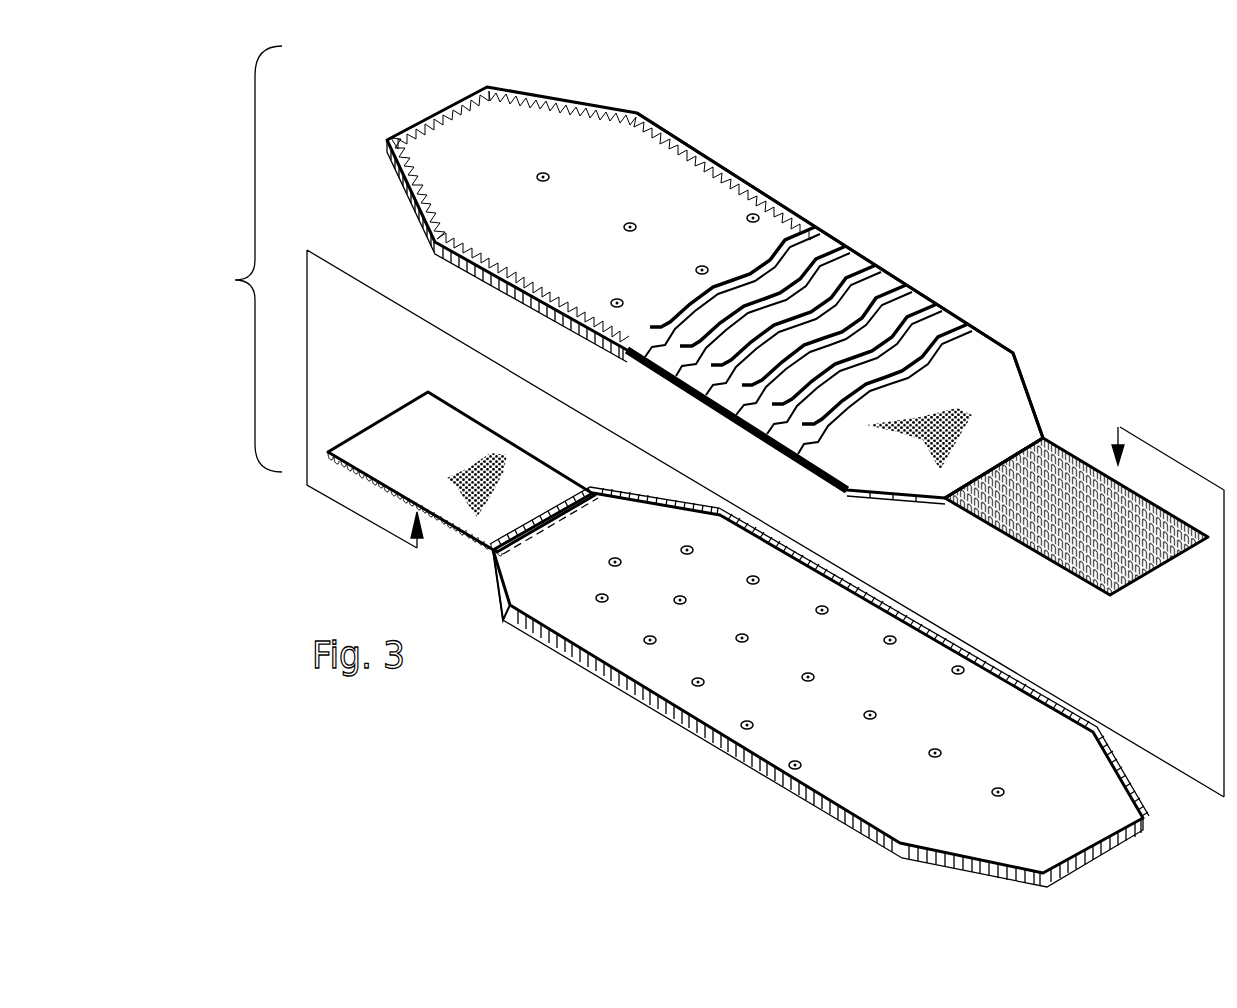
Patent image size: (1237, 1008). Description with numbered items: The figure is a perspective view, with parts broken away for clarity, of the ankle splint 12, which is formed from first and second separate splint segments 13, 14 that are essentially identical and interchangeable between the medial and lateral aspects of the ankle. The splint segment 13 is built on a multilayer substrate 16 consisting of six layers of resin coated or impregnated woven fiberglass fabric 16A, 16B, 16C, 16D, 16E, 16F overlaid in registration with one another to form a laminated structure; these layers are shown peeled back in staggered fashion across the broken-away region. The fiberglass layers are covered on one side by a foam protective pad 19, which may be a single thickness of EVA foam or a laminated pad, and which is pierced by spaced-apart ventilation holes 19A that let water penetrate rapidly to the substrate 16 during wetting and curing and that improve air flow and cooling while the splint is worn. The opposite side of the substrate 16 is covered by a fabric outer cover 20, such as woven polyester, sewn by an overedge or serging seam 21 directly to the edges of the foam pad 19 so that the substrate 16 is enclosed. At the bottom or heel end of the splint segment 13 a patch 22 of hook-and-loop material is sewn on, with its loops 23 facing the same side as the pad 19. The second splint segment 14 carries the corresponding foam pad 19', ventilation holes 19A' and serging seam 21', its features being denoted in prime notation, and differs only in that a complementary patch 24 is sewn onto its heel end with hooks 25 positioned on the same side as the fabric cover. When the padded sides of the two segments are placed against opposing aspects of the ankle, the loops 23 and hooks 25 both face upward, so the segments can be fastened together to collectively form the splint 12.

The ankle splint 12 is at (235, 280).
The splint segment 13 is at (773, 193).
The splint segment 14 is at (838, 830).
The multilayer substrate 16 is at (797, 467).
The woven fiberglass fabric layer 16A is at (983, 346).
The woven fiberglass fabric layer 16B is at (955, 326).
The woven fiberglass fabric layer 16C is at (925, 308).
The woven fiberglass fabric layer 16D is at (895, 290).
The woven fiberglass fabric layer 16E is at (863, 268).
The woven fiberglass fabric layer 16F is at (832, 247).
The foam protective pad 19 is at (604, 215).
The foam protective pad 19' is at (842, 718).
The ventilation holes 19A is at (648, 195).
The ventilation holes 19A' is at (787, 671).
The fabric outer cover 20 is at (1005, 372).
The serging seam 21 is at (825, 233).
The serging seam 21' is at (529, 633).
The patch 22 is at (1132, 588).
The loops 23 is at (1085, 458).
The patch 24 is at (483, 440).
The hooks 25 is at (455, 522).